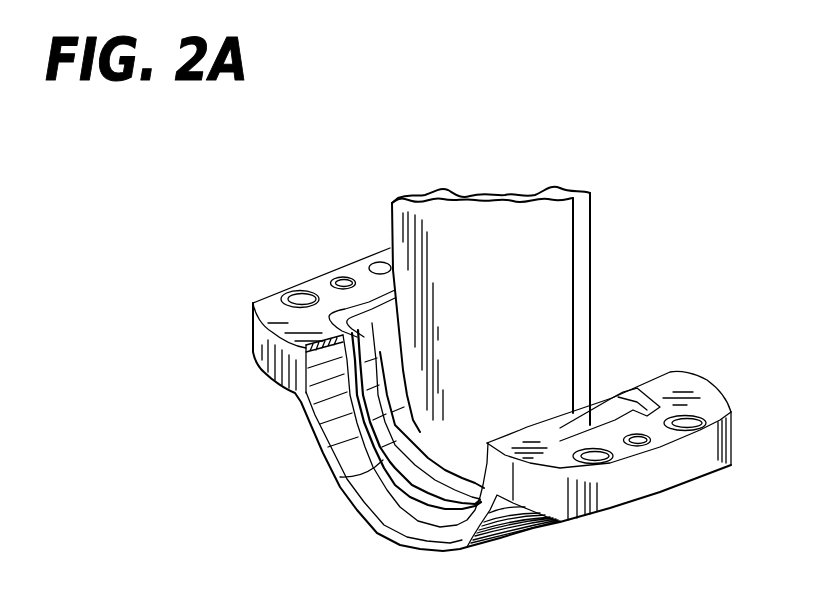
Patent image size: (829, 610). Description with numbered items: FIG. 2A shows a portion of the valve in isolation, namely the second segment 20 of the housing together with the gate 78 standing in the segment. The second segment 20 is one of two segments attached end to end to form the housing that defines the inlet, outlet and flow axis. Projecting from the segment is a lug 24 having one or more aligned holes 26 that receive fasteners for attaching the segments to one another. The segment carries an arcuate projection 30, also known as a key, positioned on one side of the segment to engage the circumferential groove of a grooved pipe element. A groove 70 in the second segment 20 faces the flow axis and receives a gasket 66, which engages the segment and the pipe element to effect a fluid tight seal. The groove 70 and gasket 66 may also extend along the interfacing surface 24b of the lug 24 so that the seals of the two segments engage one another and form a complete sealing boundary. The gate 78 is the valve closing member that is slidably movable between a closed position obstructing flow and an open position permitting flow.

The second segment 20 is at (530, 537).
The lug 24 is at (690, 472).
The interfacing surface 24b is at (677, 382).
The hole 26 is at (700, 412).
The arcuate projection 30 is at (350, 486).
The gasket 66 is at (618, 388).
The groove 70 is at (382, 515).
The gate 78 is at (594, 257).